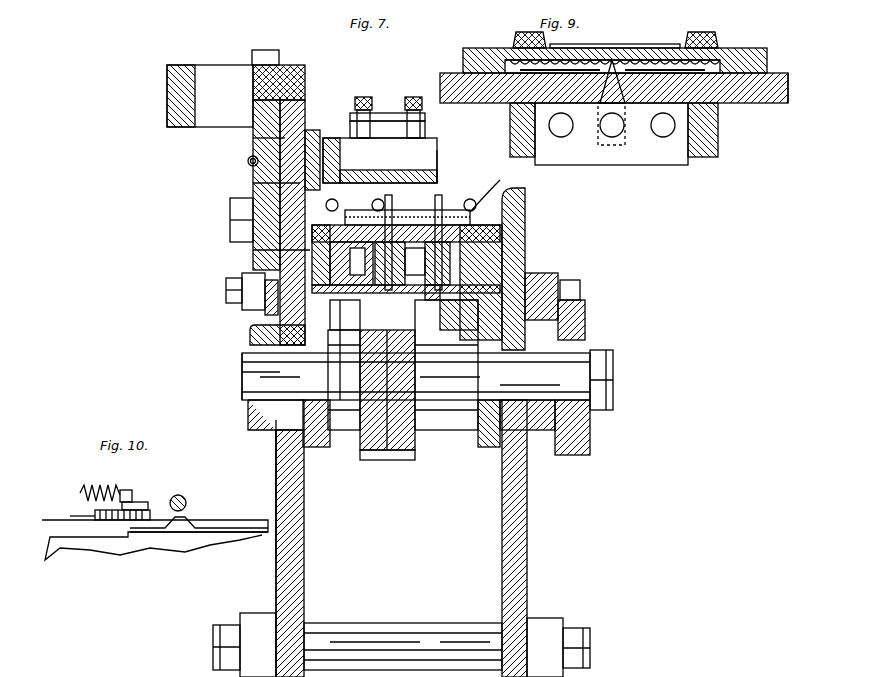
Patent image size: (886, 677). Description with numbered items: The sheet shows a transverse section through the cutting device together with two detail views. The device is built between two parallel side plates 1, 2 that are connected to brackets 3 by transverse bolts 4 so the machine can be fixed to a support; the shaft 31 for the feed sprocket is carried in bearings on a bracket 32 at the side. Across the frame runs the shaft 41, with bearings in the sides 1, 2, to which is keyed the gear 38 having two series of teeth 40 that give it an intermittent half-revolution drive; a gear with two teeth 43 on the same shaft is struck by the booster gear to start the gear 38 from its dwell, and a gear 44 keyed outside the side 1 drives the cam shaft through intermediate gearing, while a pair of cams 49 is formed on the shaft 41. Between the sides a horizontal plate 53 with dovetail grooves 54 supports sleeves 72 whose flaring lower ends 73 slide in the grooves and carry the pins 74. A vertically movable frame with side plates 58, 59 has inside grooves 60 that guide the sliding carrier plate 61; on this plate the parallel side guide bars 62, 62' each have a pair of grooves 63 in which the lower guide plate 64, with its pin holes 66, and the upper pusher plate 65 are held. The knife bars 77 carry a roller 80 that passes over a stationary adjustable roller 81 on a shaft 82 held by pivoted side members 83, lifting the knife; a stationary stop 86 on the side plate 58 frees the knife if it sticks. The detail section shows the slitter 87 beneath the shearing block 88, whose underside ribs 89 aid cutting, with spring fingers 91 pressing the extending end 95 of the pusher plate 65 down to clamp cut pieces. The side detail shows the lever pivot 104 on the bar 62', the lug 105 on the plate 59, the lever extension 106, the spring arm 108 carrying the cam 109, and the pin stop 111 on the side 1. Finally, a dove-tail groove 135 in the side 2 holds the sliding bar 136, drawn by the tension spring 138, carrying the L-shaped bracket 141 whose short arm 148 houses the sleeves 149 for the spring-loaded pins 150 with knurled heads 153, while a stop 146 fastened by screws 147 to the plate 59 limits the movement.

In FIG. 7, the side plate 1 is at (527, 540).
In FIG. 7, the side plate 2 is at (276, 498).
In FIG. 10, the side plate 2 is at (264, 490).
In FIG. 7, the bracket 3 is at (255, 618).
In FIG. 7, the transverse bolt 4 is at (430, 630).
In FIG. 7, the shaft 31 is at (167, 97).
In FIG. 7, the bracket or support 32 is at (285, 65).
In FIG. 7, the gear 38 is at (415, 440).
In FIG. 7, the series of teeth 40 is at (420, 320).
In FIG. 7, the shaft 41 is at (462, 402).
In FIG. 7, the teeth 43 is at (372, 460).
In FIG. 7, the gear 44 is at (590, 448).
In FIG. 7, the cam 49 is at (328, 447).
In FIG. 7, the plate 53 is at (525, 275).
In FIG. 7, the dovetail groove 54 is at (440, 300).
In FIG. 7, the side plate of vertically movable frame 58 is at (525, 248).
In FIG. 7, the side plate of vertically movable frame 59 is at (242, 356).
In FIG. 7, the groove 60 is at (253, 250).
In FIG. 7, the carrier plate 61 is at (525, 215).
In FIG. 9, the carrier plate 61 is at (765, 103).
In FIG. 7, the side guide bar 62 is at (339, 197).
In FIG. 7, the side guide bar 62' is at (513, 259).
In FIG. 7, the groove 63 is at (430, 195).
In FIG. 7, the guide plate 64 is at (407, 204).
In FIG. 7, the pusher plate 65 is at (478, 200).
In FIG. 7, the hole 66 is at (413, 237).
In FIG. 7, the sleeve 72 is at (525, 262).
In FIG. 7, the flaring end 73 is at (455, 325).
In FIG. 7, the pin 74 is at (460, 180).
In FIG. 7, the knife bar 77 is at (242, 283).
In FIG. 9, the knife bar 77 is at (718, 137).
In FIG. 7, the roller 80 is at (253, 260).
In FIG. 7, the stationary adjustable roller 81 is at (345, 340).
In FIG. 7, the shaft 82 is at (250, 366).
In FIG. 7, the side member 83 is at (235, 300).
In FIG. 7, the stationary stop 86 is at (525, 235).
In FIG. 9, the slitter 87 is at (600, 105).
In FIG. 9, the shearing block 88 is at (768, 70).
In FIG. 9, the longitudinal rib 89 is at (463, 63).
In FIG. 9, the spring finger 91 is at (520, 32).
In FIG. 9, the extending end of pusher plate 95 is at (660, 44).
In FIG. 10, the pivot 104 is at (140, 505).
In FIG. 10, the lug 105 is at (104, 490).
In FIG. 10, the extension of lever 106 is at (90, 516).
In FIG. 10, the spring arm 108 is at (228, 535).
In FIG. 10, the cam 109 is at (188, 520).
In FIG. 10, the pin stop or cam-operating device 111 is at (185, 498).
In FIG. 7, the dove-tail groove 135 is at (305, 125).
In FIG. 7, the horizontally sliding bar 136 is at (253, 138).
In FIG. 7, the tension spring 138 is at (248, 161).
In FIG. 7, the L-shaped bracket 141 is at (322, 138).
In FIG. 7, the stop 146 is at (253, 183).
In FIG. 7, the screw 147 is at (262, 318).
In FIG. 7, the short arm 148 is at (437, 140).
In FIG. 7, the sleeve 149 is at (425, 120).
In FIG. 7, the pin 150 is at (437, 185).
In FIG. 7, the knurled head 153 is at (408, 97).